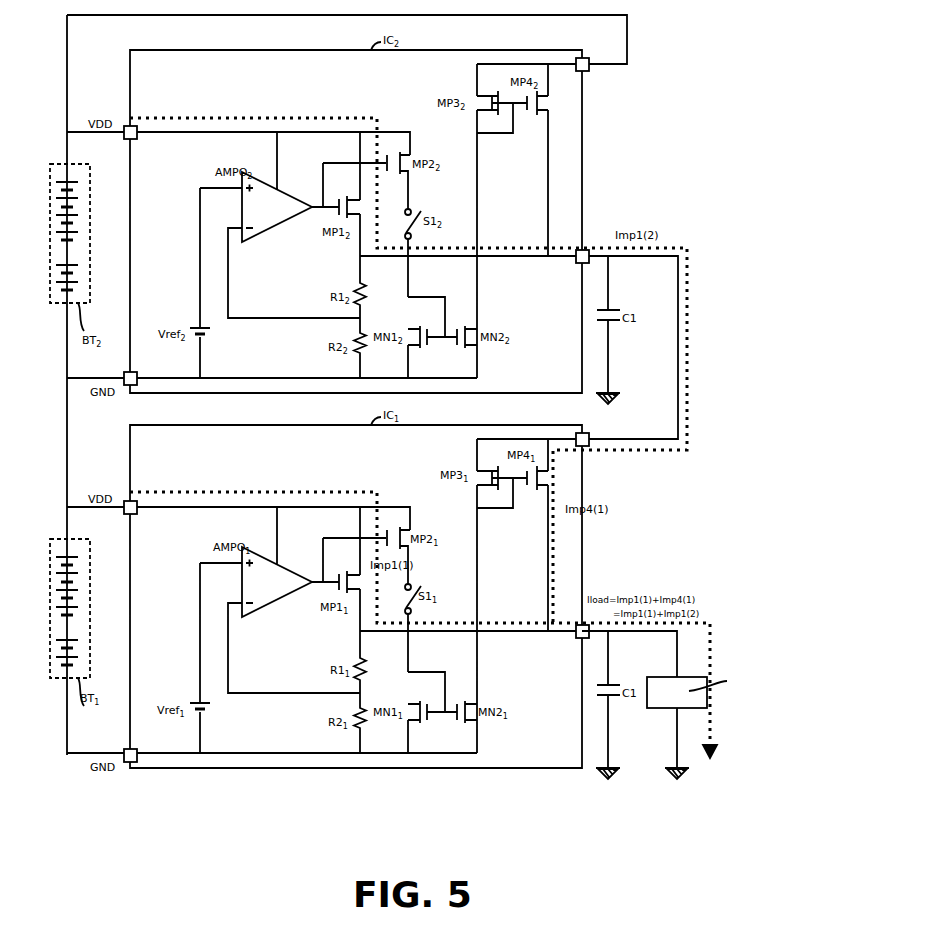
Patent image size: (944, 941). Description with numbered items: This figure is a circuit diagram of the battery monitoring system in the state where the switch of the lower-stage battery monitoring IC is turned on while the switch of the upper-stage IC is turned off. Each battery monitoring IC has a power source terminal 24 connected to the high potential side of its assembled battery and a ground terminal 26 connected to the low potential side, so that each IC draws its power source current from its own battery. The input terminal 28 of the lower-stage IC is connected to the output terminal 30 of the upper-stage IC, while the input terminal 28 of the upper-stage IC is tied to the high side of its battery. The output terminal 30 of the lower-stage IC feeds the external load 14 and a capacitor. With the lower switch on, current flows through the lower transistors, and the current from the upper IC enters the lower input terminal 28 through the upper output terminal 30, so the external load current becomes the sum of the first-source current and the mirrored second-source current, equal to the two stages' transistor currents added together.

The external load 14 is at (690, 675).
The power source terminal 24 is at (128, 500).
The ground terminal 26 is at (128, 748).
The input terminal 28 is at (601, 466).
The output terminal 30 is at (568, 660).